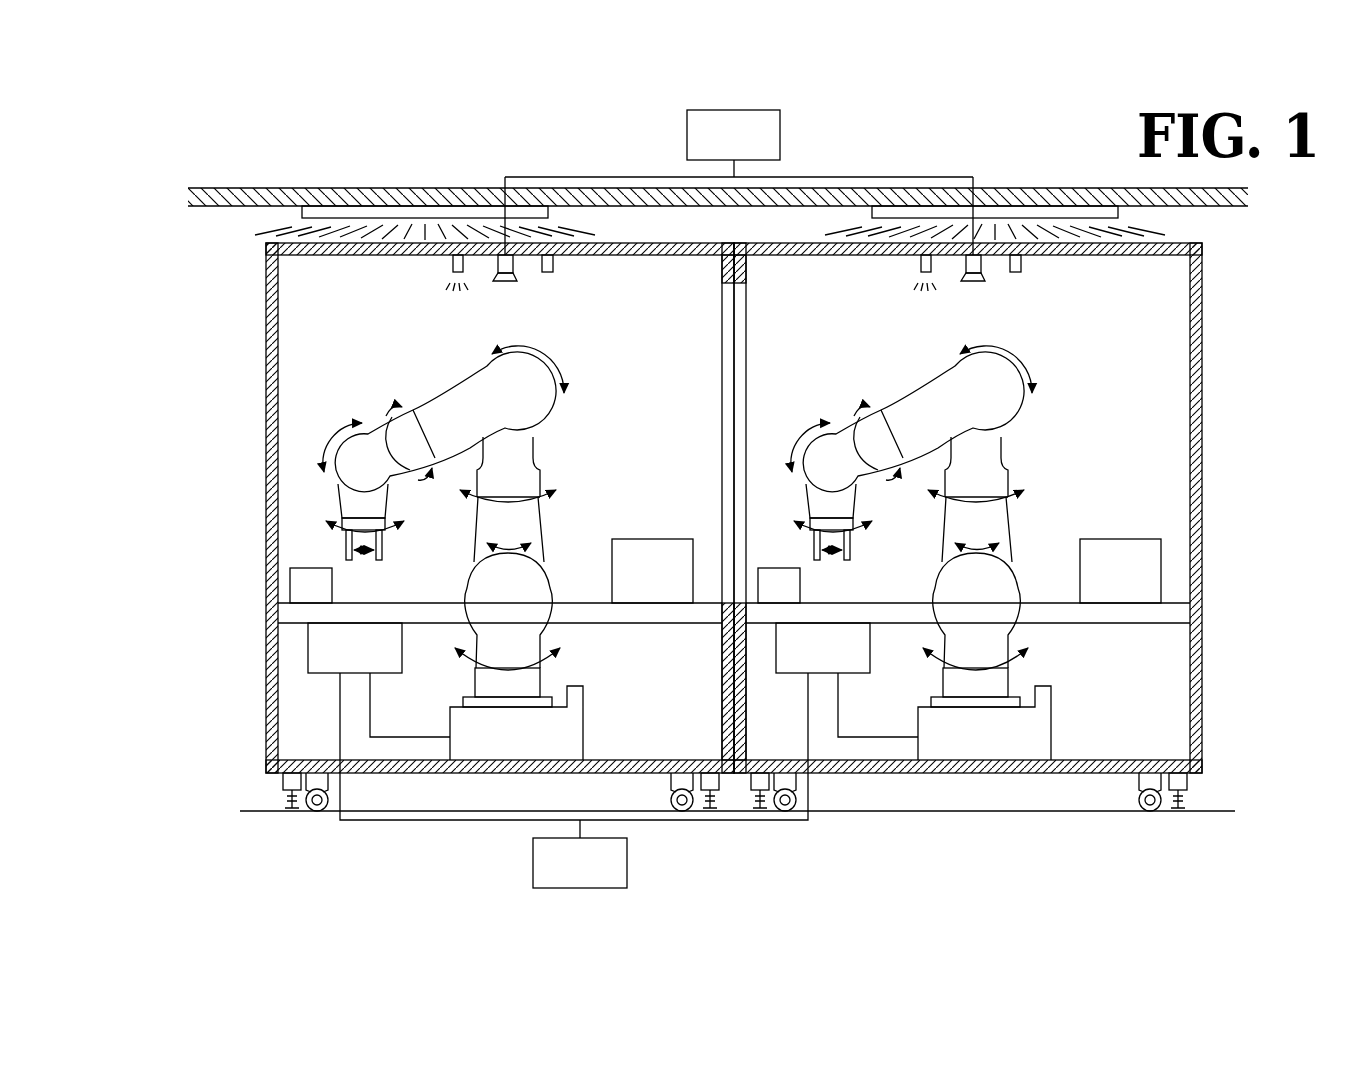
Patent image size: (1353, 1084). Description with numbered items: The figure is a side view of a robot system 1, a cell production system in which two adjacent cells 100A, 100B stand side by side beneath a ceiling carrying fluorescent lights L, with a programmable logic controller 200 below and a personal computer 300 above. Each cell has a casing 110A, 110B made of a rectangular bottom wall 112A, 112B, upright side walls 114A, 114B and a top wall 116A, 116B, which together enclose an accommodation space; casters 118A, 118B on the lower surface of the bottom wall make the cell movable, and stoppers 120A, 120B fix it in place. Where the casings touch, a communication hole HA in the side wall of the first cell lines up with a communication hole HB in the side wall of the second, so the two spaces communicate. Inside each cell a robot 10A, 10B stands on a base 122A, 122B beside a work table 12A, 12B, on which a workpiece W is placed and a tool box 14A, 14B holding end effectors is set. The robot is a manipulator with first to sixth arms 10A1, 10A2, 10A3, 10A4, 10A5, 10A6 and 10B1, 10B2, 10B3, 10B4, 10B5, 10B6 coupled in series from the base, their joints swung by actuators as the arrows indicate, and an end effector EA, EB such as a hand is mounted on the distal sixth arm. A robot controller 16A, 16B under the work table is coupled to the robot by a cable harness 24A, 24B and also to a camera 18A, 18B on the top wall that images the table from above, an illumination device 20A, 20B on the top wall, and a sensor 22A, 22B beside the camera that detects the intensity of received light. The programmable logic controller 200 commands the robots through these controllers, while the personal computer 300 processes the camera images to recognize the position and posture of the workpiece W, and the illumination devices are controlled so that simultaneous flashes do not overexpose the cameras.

The robot system 1 is at (170, 172).
The cell 100A is at (232, 242).
The cell 100B is at (1220, 236).
The casing 110A is at (222, 378).
The casing 110B is at (1243, 376).
The bottom wall 112A is at (550, 776).
The bottom wall 112B is at (1018, 776).
The side wall 114A is at (268, 467).
The side wall 114B is at (1204, 470).
The top wall 116A is at (632, 257).
The top wall 116B is at (1100, 257).
The caster 118A is at (310, 811).
The caster 118B is at (964, 818).
The stopper 120A is at (283, 789).
The stopper 120B is at (945, 823).
The base 122A is at (585, 718).
The base 122B is at (1033, 723).
The work table 12A is at (700, 624).
The work table 12B is at (968, 642).
The tool box 14A is at (651, 538).
The tool box 14B is at (1123, 543).
The robot controller 16A is at (321, 674).
The robot controller 16B is at (812, 678).
The camera 18A is at (505, 283).
The camera 18B is at (957, 296).
The illumination device 20A is at (450, 268).
The illumination device 20B is at (889, 273).
The sensor 22A is at (548, 274).
The sensor 22B is at (1038, 290).
The cable harness 24A is at (403, 735).
The cable harness 24B is at (878, 705).
The robot 10A is at (395, 363).
The robot 10B is at (954, 507).
The first arm 10A1 is at (560, 642).
The first arm 10B1 is at (1020, 625).
The second arm 10A2 is at (528, 520).
The second arm 10B2 is at (1007, 526).
The third arm 10A3 is at (530, 441).
The third arm 10B3 is at (1016, 464).
The fourth arm 10A4 is at (460, 402).
The fourth arm 10B4 is at (917, 419).
The fifth arm 10A5 is at (388, 430).
The fifth arm 10B5 is at (845, 430).
The sixth arm 10A6 is at (376, 505).
The sixth arm 10B6 is at (867, 508).
The end effector EA is at (385, 555).
The end effector EB is at (864, 552).
The workpiece W is at (312, 568).
The communication hole HA is at (722, 288).
The communication hole HB is at (746, 288).
The fluorescent light L is at (383, 208).
The programmable logic controller 200 is at (530, 862).
The personal computer 300 is at (782, 125).